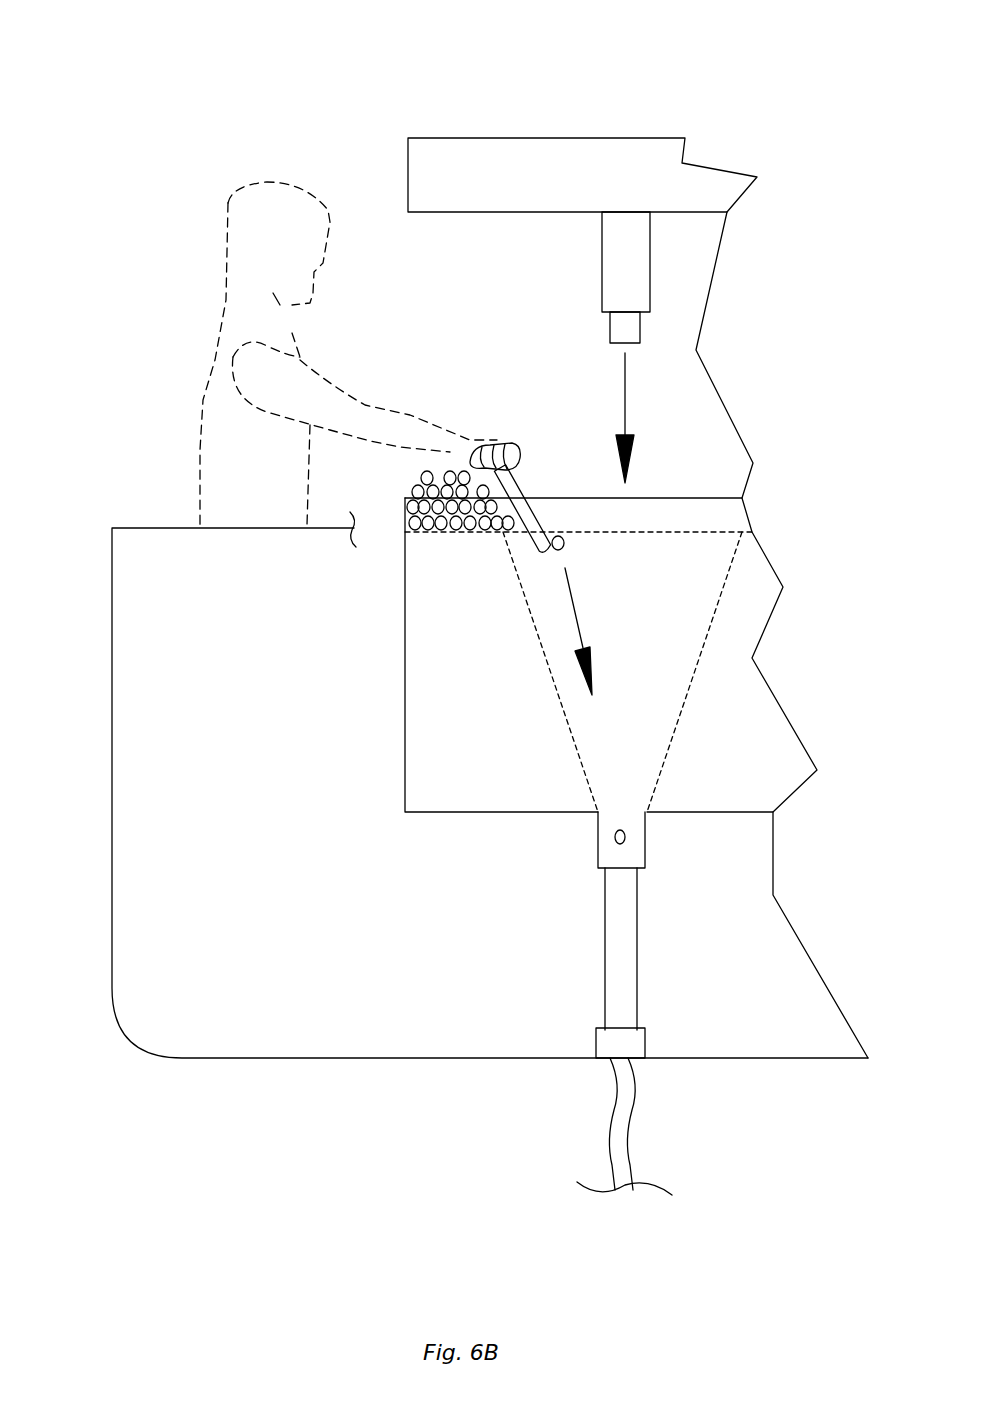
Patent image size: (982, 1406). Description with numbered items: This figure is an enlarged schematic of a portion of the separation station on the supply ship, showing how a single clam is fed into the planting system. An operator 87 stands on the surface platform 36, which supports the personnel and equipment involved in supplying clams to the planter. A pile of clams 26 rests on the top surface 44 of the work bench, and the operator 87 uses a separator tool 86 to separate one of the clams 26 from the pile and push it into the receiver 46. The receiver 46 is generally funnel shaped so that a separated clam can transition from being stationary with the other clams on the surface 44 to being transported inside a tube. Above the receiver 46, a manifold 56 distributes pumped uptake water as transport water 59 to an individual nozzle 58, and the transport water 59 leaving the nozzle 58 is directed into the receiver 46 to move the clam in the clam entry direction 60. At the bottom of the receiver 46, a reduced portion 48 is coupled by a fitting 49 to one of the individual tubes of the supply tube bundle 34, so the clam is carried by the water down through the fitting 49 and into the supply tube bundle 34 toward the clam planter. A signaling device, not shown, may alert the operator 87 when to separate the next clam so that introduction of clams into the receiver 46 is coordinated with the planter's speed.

The manifold 56 is at (556, 138).
The individual nozzle 58 is at (602, 258).
The transport water 59 is at (626, 418).
The top surface 44 is at (698, 497).
The receiver 46 is at (552, 675).
The clam entry direction 60 is at (575, 620).
The reduced portion 48 is at (648, 840).
The fitting 49 is at (595, 1043).
The supply tube bundle 34 is at (607, 1138).
The surface platform 36 is at (112, 637).
The clam 26 is at (421, 475).
The separator tool 86 is at (523, 487).
The operator 87 is at (228, 204).